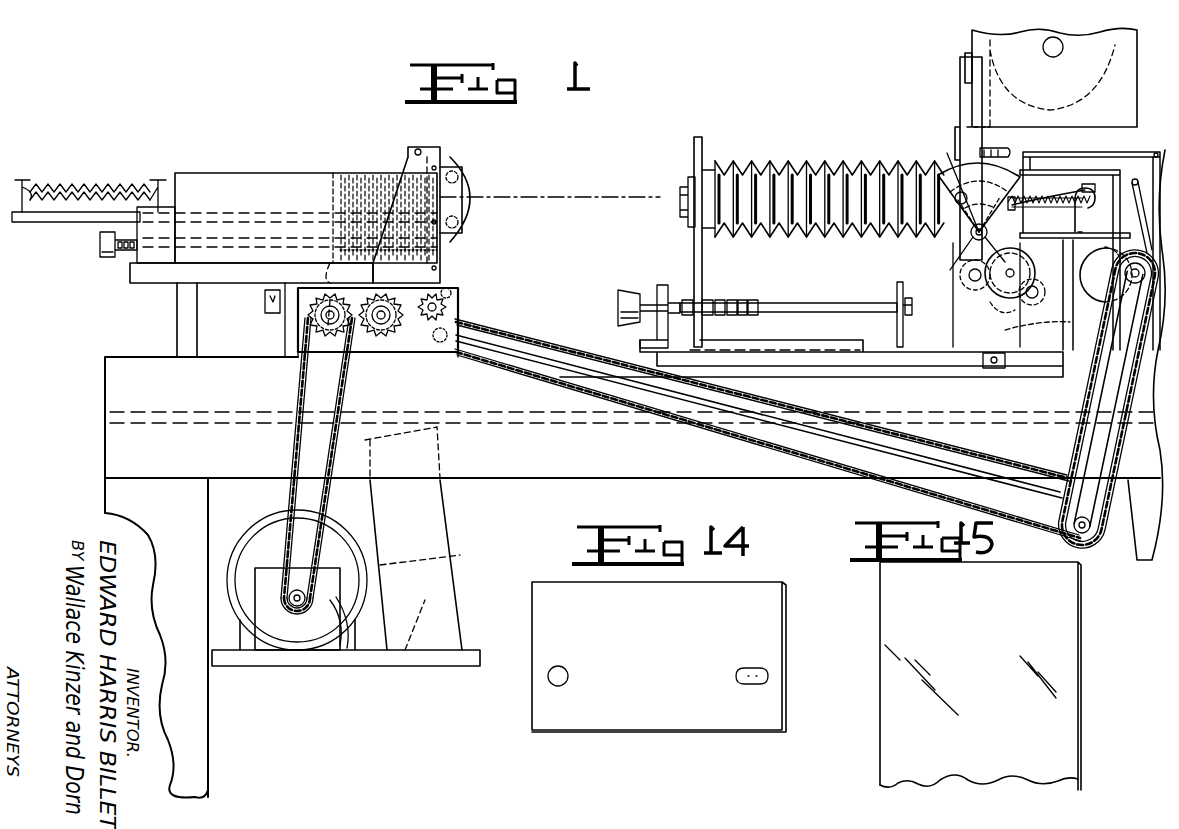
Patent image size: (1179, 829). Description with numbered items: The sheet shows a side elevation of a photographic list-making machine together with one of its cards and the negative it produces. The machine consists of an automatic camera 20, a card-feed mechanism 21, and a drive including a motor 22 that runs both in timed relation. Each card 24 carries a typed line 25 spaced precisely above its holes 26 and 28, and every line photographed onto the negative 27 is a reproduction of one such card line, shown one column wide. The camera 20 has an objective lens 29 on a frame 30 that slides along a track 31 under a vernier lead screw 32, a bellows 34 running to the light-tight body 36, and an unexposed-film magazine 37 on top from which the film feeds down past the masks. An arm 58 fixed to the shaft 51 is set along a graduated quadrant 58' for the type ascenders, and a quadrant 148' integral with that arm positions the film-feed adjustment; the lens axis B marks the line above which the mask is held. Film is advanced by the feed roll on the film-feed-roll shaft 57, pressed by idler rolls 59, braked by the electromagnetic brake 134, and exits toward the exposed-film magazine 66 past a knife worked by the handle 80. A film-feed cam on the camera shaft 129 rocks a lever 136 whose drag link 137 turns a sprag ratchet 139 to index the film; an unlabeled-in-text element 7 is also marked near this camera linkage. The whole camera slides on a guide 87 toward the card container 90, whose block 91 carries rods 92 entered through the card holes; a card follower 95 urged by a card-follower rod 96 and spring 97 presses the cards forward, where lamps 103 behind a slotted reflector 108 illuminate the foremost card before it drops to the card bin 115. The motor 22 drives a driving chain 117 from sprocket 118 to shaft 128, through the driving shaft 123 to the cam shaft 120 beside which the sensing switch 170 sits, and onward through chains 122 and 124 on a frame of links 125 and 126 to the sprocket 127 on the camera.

In FIG. 1, the lever arm 7 is at (1116, 231).
In FIG. 1, the automatic camera 20 is at (929, 161).
In FIG. 1, the card-feed mechanism 21 is at (336, 149).
In FIG. 1, the motor 22 is at (262, 535).
In FIG. 1, the card 24 is at (365, 178).
In FIG. 14, the card 24 is at (740, 596).
In FIG. 14, the typed line 25 is at (582, 649).
In FIG. 14, the hole 26 is at (558, 686).
In FIG. 1, the negative 27 is at (990, 110).
In FIG. 15, the negative 27 is at (1070, 647).
In FIG. 14, the hole 28 is at (752, 686).
In FIG. 1, the objective lens 29 is at (683, 180).
In FIG. 1, the frame 30 is at (697, 263).
In FIG. 1, the track 31 is at (875, 350).
In FIG. 1, the lead screw 32 is at (748, 302).
In FIG. 1, the bellows 34 is at (808, 165).
In FIG. 1, the camera body 36 is at (951, 128).
In FIG. 1, the unexposed-film magazine 37 is at (1130, 98).
In FIG. 1, the shaft 51 is at (970, 248).
In FIG. 1, the film-feed-roll shaft 57 is at (1015, 272).
In FIG. 1, the arm 58 is at (964, 208).
In FIG. 1, the quadrant 58' is at (961, 205).
In FIG. 1, the idler roll 59 is at (1010, 300).
In FIG. 1, the exposed-film magazine 66 is at (1091, 280).
In FIG. 1, the handle 80 is at (1094, 212).
In FIG. 1, the guide 87 is at (792, 380).
In FIG. 1, the card container 90 is at (280, 178).
In FIG. 1, the block 91 is at (140, 253).
In FIG. 1, the rod 92 is at (240, 270).
In FIG. 1, the card follower 95 is at (326, 203).
In FIG. 1, the card-follower rod 96 is at (232, 220).
In FIG. 1, the spring 97 is at (90, 190).
In FIG. 1, the lamp 103 is at (460, 172).
In FIG. 1, the reflector 108 is at (478, 185).
In FIG. 1, the card bin 115 is at (430, 518).
In FIG. 1, the driving chain 117 is at (290, 452).
In FIG. 1, the sprocket 118 is at (300, 605).
In FIG. 1, the shaft 120 is at (448, 286).
In FIG. 1, the chain 122 is at (515, 322).
In FIG. 1, the driving shaft 123 is at (385, 338).
In FIG. 1, the chain 124 is at (1080, 390).
In FIG. 1, the link 125 is at (735, 425).
In FIG. 1, the link 126 is at (1078, 445).
In FIG. 1, the sprocket 127 is at (1068, 330).
In FIG. 1, the shaft 128 is at (332, 335).
In FIG. 1, the shaft 129 is at (1120, 295).
In FIG. 1, the electromagnetic brake 134 is at (1025, 245).
In FIG. 1, the lever 136 is at (1136, 186).
In FIG. 1, the drag link 137 is at (1088, 175).
In FIG. 1, the ratchet 139 is at (970, 240).
In FIG. 1, the quadrant 148' is at (1021, 143).
In FIG. 1, the sensing switch 170 is at (452, 300).
In FIG. 1, the lens axis B is at (540, 197).